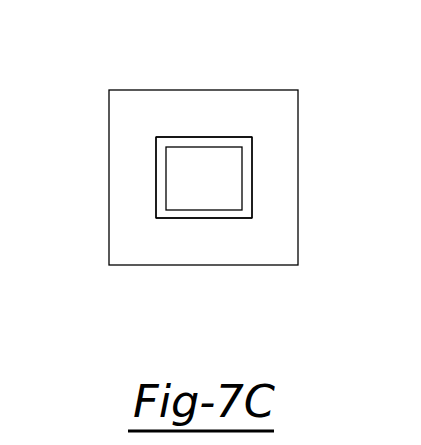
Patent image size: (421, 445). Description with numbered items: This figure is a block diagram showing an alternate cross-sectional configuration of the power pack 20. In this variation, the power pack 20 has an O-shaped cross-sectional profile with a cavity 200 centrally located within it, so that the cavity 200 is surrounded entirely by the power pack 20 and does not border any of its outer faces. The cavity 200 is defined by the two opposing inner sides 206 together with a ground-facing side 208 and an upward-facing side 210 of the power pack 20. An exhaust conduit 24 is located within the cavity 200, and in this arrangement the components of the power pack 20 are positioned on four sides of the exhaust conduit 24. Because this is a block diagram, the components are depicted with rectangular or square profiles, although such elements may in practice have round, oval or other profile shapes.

The power pack 20 is at (122, 107).
The cavity 200 is at (181, 135).
The ground-facing side 208 is at (203, 137).
The opposing inner sides 206 is at (156, 178).
The exhaust conduit 24 is at (230, 192).
The upward-facing side 210 is at (180, 218).